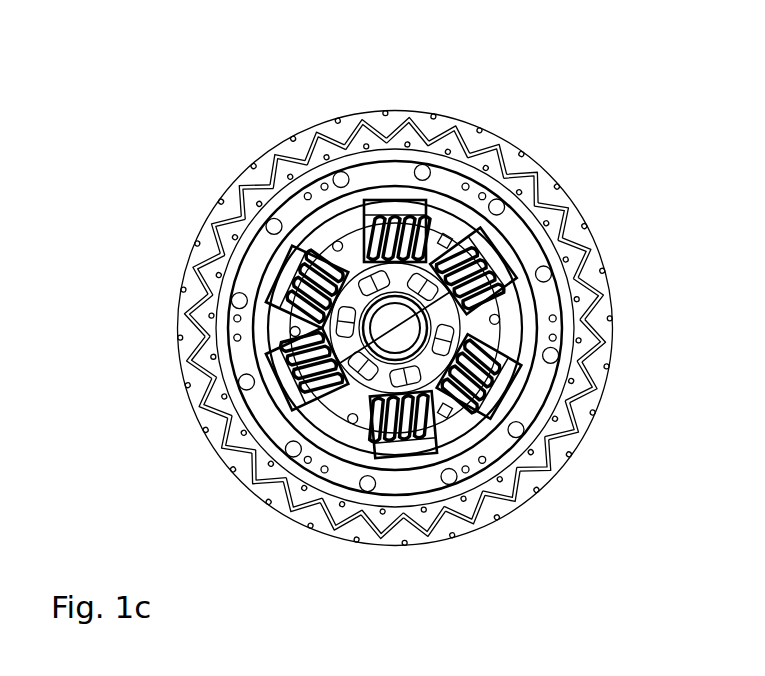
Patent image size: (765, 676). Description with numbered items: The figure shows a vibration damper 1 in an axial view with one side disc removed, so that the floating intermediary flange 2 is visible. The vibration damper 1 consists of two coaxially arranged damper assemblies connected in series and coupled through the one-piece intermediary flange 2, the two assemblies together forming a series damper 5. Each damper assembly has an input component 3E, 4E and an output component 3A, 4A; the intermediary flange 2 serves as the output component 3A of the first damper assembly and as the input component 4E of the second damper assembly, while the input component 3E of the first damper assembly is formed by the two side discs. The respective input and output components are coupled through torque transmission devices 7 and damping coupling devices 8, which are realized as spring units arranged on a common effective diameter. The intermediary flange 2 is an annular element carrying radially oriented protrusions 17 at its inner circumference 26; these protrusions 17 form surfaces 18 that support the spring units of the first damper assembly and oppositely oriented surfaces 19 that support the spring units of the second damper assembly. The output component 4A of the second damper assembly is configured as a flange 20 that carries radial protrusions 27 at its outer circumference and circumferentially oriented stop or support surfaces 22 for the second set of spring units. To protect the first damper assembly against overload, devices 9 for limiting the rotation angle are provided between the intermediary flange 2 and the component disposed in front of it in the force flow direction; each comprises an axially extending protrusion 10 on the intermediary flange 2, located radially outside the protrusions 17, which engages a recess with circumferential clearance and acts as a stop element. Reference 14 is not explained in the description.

The vibration damper 1 is at (509, 108).
The series damper 5 is at (580, 48).
The serpentine spring 14 is at (400, 133).
The input component 3E is at (528, 186).
The output component 3A is at (523, 266).
The input component 4E is at (444, 328).
The output component 4A is at (458, 328).
The flange 20 is at (508, 323).
The inner circumference 26 is at (507, 370).
The surfaces 18 is at (470, 400).
The devices for limiting the rotation angle 9 is at (448, 428).
The floating intermediary flange 2 is at (273, 273).
The protrusion 10 is at (292, 326).
The protrusions 17 is at (283, 332).
The torque transmission devices 7 is at (305, 375).
The damping coupling devices 8 is at (403, 423).
The radial protrusions 27 is at (327, 423).
The stop or support surfaces 22 is at (385, 432).
The surfaces 19 is at (428, 440).